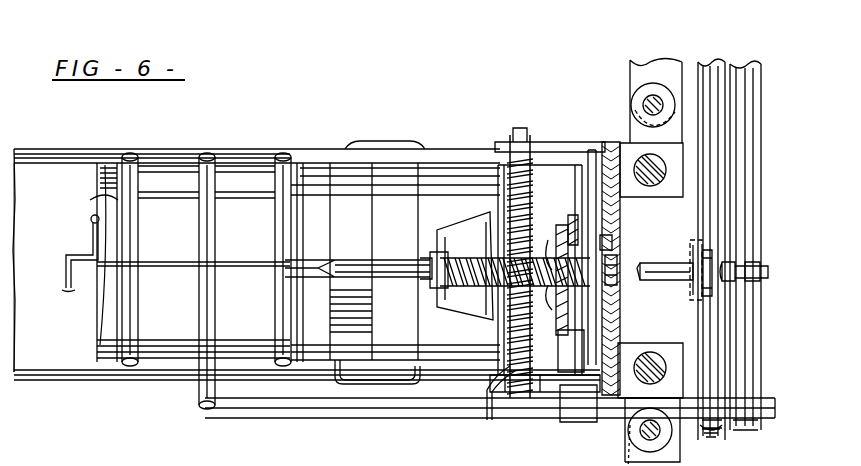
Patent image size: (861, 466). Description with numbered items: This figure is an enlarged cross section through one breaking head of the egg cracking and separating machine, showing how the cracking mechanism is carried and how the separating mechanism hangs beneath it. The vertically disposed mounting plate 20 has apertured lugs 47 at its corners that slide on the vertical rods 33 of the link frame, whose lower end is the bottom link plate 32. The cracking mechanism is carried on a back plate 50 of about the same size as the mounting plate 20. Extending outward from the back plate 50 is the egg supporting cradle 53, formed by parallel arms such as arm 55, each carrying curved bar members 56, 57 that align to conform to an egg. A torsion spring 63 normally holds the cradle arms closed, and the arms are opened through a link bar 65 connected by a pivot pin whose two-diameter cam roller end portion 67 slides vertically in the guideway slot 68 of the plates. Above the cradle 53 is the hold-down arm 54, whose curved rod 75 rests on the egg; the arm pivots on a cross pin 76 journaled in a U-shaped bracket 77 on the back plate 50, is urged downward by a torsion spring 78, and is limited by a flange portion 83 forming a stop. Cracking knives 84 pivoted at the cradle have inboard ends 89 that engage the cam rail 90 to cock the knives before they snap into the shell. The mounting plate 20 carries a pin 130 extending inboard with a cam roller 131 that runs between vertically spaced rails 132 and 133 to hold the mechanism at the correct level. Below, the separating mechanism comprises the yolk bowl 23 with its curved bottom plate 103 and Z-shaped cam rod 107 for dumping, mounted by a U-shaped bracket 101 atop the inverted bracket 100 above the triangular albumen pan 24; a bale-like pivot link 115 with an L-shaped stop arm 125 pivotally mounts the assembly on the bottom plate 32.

The mounting plate 20 is at (614, 200).
The yolk receiving bowl 23 is at (92, 199).
The albumen receiving pan 24 is at (66, 163).
The bottom link plate 32 is at (642, 118).
The vertical rods 33 is at (622, 150).
The apertured lugs 47 is at (645, 160).
The back plate 50 is at (592, 200).
The egg supporting cradle assembly 53 is at (125, 385).
The hold-down arm 54 is at (368, 418).
The cradle arm 55 is at (306, 335).
The curved bar member 56 is at (128, 310).
The curved bar member 57 is at (277, 318).
The torsion spring 63 is at (460, 278).
The link bar 65 is at (556, 312).
The cam roller forming end portion 67 is at (617, 285).
The guideway forming slot 68 is at (612, 255).
The curved rod 75 is at (208, 302).
The cross pin 76 is at (538, 346).
The U-shaped bracket 77 is at (552, 395).
The torsion spring 78 is at (507, 333).
The flange portion 83 is at (565, 422).
The cracking knife 84 is at (385, 280).
The knife end 89 is at (766, 275).
The cam rail 90 is at (752, 112).
The bracket 100 is at (356, 331).
The U-shaped bracket 101 is at (382, 260).
The curved bottom plate 103 is at (112, 325).
The Z-shaped cam rod 107 is at (62, 252).
The pivot link 115 is at (430, 376).
The L-shaped arm 125 is at (422, 168).
The pin 130 is at (700, 262).
The cam roller 131 is at (712, 262).
The rail 132 is at (704, 68).
The rail 133 is at (706, 437).